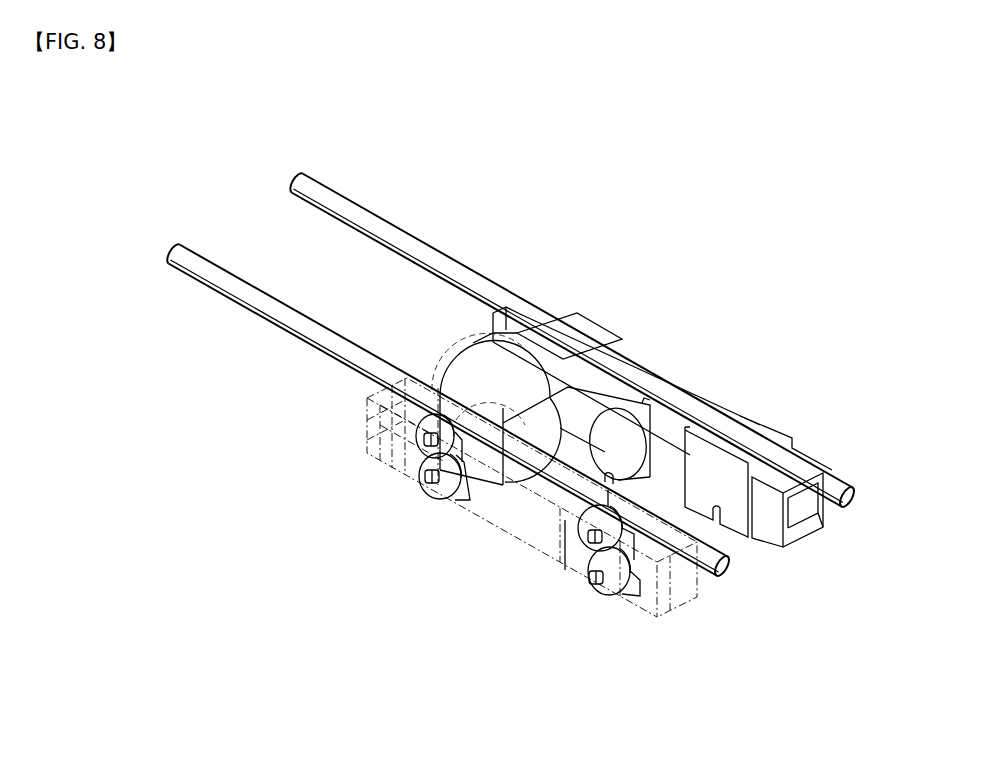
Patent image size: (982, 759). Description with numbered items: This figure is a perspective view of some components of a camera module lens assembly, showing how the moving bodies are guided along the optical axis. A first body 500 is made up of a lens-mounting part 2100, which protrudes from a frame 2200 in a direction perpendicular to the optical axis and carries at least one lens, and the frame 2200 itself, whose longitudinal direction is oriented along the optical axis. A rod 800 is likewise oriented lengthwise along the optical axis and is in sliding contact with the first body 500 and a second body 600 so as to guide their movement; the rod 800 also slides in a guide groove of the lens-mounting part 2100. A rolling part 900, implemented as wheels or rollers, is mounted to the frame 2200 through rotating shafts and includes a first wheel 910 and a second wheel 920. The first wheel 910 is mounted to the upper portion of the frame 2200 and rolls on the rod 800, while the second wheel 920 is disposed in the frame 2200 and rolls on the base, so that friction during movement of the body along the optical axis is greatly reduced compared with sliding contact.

The rod 800 is at (375, 368).
The lens-mounting part 2100 is at (474, 370).
The frame 2200 is at (720, 403).
The first body 500 is at (520, 498).
The second body 600 is at (415, 438).
The rolling part 900 is at (428, 592).
The first wheel 910 is at (422, 460).
The second wheel 920 is at (426, 483).